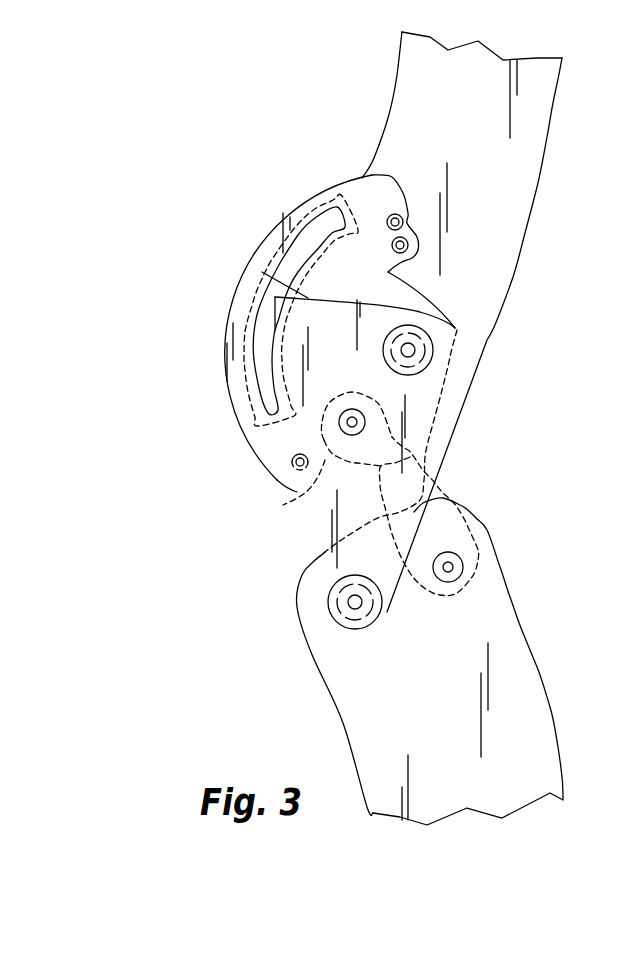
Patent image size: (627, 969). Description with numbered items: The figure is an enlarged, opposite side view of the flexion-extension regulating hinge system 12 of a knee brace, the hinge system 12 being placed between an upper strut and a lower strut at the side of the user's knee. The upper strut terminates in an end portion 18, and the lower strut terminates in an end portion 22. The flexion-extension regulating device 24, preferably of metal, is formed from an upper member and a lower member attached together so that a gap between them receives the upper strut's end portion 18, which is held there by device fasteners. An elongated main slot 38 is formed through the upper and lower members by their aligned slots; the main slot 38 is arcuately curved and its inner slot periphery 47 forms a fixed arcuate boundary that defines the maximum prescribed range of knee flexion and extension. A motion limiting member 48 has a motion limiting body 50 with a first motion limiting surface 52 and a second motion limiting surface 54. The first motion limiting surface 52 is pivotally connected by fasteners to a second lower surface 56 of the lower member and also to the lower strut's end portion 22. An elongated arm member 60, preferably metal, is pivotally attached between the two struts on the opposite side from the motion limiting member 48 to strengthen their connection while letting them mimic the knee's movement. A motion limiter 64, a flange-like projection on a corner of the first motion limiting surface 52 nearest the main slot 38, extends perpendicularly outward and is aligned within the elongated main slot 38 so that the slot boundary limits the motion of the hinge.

The hinge system 12 is at (318, 355).
The end portion of upper strut 18 is at (475, 342).
The end portion of lower strut 22 is at (497, 603).
The flexion-extension regulating device 24 is at (213, 320).
The elongated main slot 38 is at (272, 265).
The inner slot periphery 47 is at (307, 223).
The motion limiting member 48 is at (328, 540).
The motion limiting body 50 is at (415, 402).
The first motion limiting surface 52 is at (330, 516).
The second motion limiting surface 54 is at (328, 492).
The second lower surface 56 is at (363, 277).
The elongated arm member 60 is at (432, 485).
The motion limiter 64 is at (290, 302).